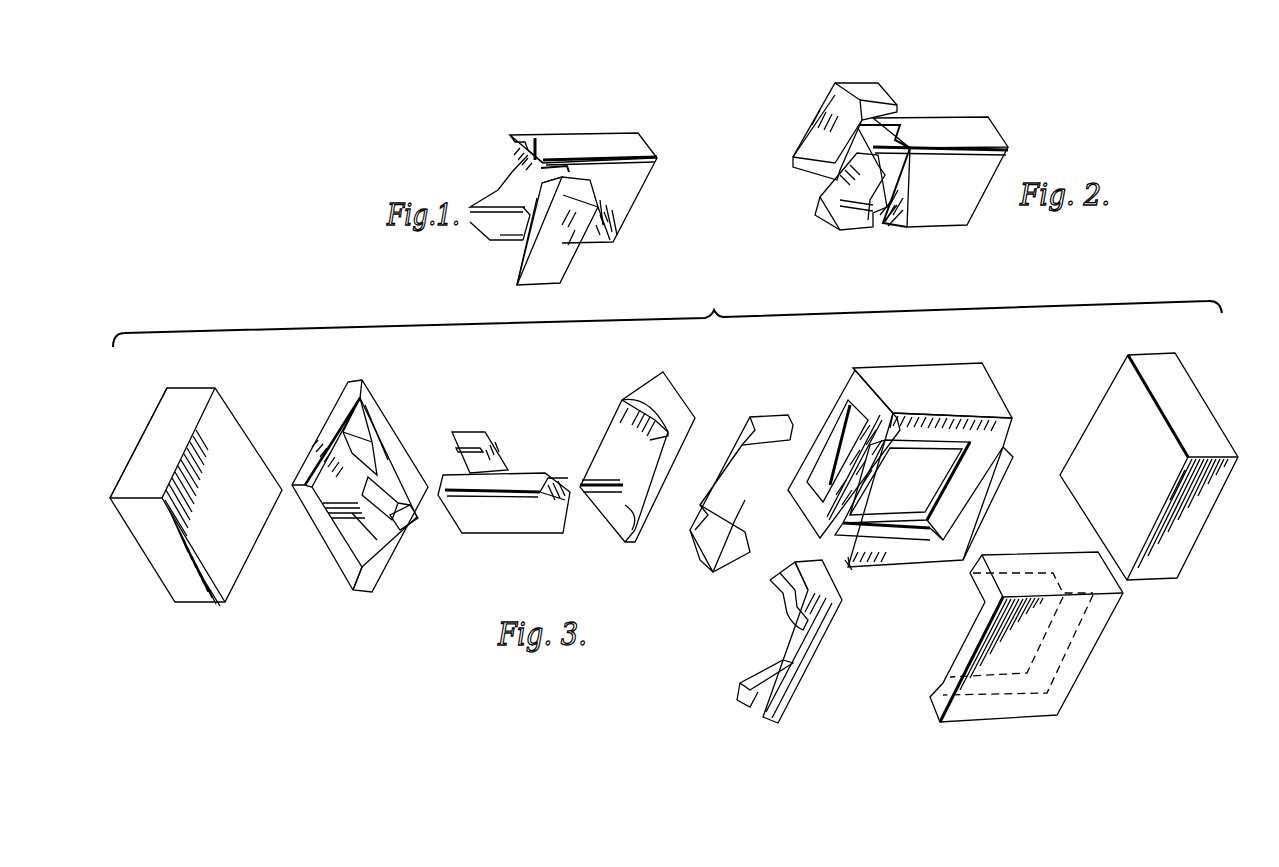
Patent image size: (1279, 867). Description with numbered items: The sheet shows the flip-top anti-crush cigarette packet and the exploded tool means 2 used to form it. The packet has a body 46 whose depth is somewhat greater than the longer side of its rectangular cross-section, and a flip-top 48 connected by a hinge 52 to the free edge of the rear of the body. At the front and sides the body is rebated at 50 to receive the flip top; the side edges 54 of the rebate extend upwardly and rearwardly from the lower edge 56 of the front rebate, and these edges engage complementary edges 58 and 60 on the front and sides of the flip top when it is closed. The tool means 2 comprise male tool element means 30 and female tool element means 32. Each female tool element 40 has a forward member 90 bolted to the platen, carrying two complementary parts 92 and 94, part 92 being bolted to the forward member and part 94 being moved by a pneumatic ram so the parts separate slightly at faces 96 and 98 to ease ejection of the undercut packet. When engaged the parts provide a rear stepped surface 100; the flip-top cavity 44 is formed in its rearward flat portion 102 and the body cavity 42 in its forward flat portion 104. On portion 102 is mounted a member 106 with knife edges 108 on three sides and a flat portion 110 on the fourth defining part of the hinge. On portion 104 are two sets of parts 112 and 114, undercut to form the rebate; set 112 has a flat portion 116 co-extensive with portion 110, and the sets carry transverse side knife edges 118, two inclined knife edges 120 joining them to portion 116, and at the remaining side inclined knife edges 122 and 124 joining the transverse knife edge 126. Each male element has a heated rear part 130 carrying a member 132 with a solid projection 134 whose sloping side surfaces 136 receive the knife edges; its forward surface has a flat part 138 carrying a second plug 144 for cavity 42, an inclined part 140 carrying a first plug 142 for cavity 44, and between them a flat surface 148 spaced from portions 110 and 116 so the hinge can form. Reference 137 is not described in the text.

In FIG. 3, the tool means 2 is at (619, 560).
In FIG. 3, the male tool element means 30 is at (430, 589).
In FIG. 3, the female tool element means 32 is at (900, 655).
In FIG. 3, the female tool element 40 is at (830, 366).
In FIG. 3, the cavity 42 is at (930, 545).
In FIG. 3, the cavity 44 is at (845, 440).
In FIG. 1, the body 46 is at (593, 145).
In FIG. 2, the body 46 is at (950, 197).
In FIG. 1, the flip-top 48 is at (568, 261).
In FIG. 2, the flip-top 48 is at (812, 133).
In FIG. 1, the rebated portion 50 is at (528, 150).
In FIG. 2, the rebated portion 50 is at (845, 232).
In FIG. 1, the hinge 52 is at (530, 205).
In FIG. 2, the hinge 52 is at (840, 200).
In FIG. 1, the edges of rebated portions at sides 54 is at (533, 140).
In FIG. 2, the edges of rebated portions at sides 54 is at (898, 128).
In FIG. 2, the lower edge of rebated portion at front 56 is at (890, 222).
In FIG. 1, the edge on front of flip top 58 is at (533, 272).
In FIG. 2, the edge on front of flip top 58 is at (820, 106).
In FIG. 1, the edges on sides of flip top 60 is at (620, 196).
In FIG. 2, the edges on sides of flip top 60 is at (843, 85).
In FIG. 3, the forward member 90 is at (1142, 470).
In FIG. 3, the complementary part 92 is at (942, 403).
In FIG. 3, the complementary part 94 is at (1034, 651).
In FIG. 3, the face 96 is at (985, 485).
In FIG. 3, the face 98 is at (1030, 562).
In FIG. 3, the stepped surface 100 is at (812, 520).
In FIG. 3, the rearward flat portion 102 is at (792, 503).
In FIG. 3, the forward flat portion 104 is at (850, 567).
In FIG. 3, the member 106 is at (622, 425).
In FIG. 3, the knife edges 108 is at (603, 480).
In FIG. 3, the flat portion 110 is at (650, 492).
In FIG. 3, the set of parts 112 is at (700, 558).
In FIG. 3, the set of parts 114 is at (778, 663).
In FIG. 3, the flat portion 116 is at (740, 495).
In FIG. 3, the knife edges 118 is at (695, 540).
In FIG. 3, the inclined knife edges 120 is at (740, 450).
In FIG. 3, the inclined knife edge 122 is at (750, 688).
In FIG. 3, the inclined knife edge 124 is at (788, 612).
In FIG. 3, the knife edge 126 is at (800, 655).
In FIG. 3, the rear part 130 is at (238, 503).
In FIG. 3, the member 132 is at (340, 470).
In FIG. 3, the solid projection 134 is at (372, 538).
In FIG. 3, the sloping side surfaces 136 is at (320, 525).
In FIG. 3, the rib 137 is at (360, 525).
In FIG. 3, the flat part 138 is at (384, 513).
In FIG. 3, the inclined part 140 is at (382, 440).
In FIG. 3, the first plug 142 is at (472, 435).
In FIG. 3, the second plug 144 is at (499, 525).
In FIG. 3, the flat surface 148 is at (408, 522).